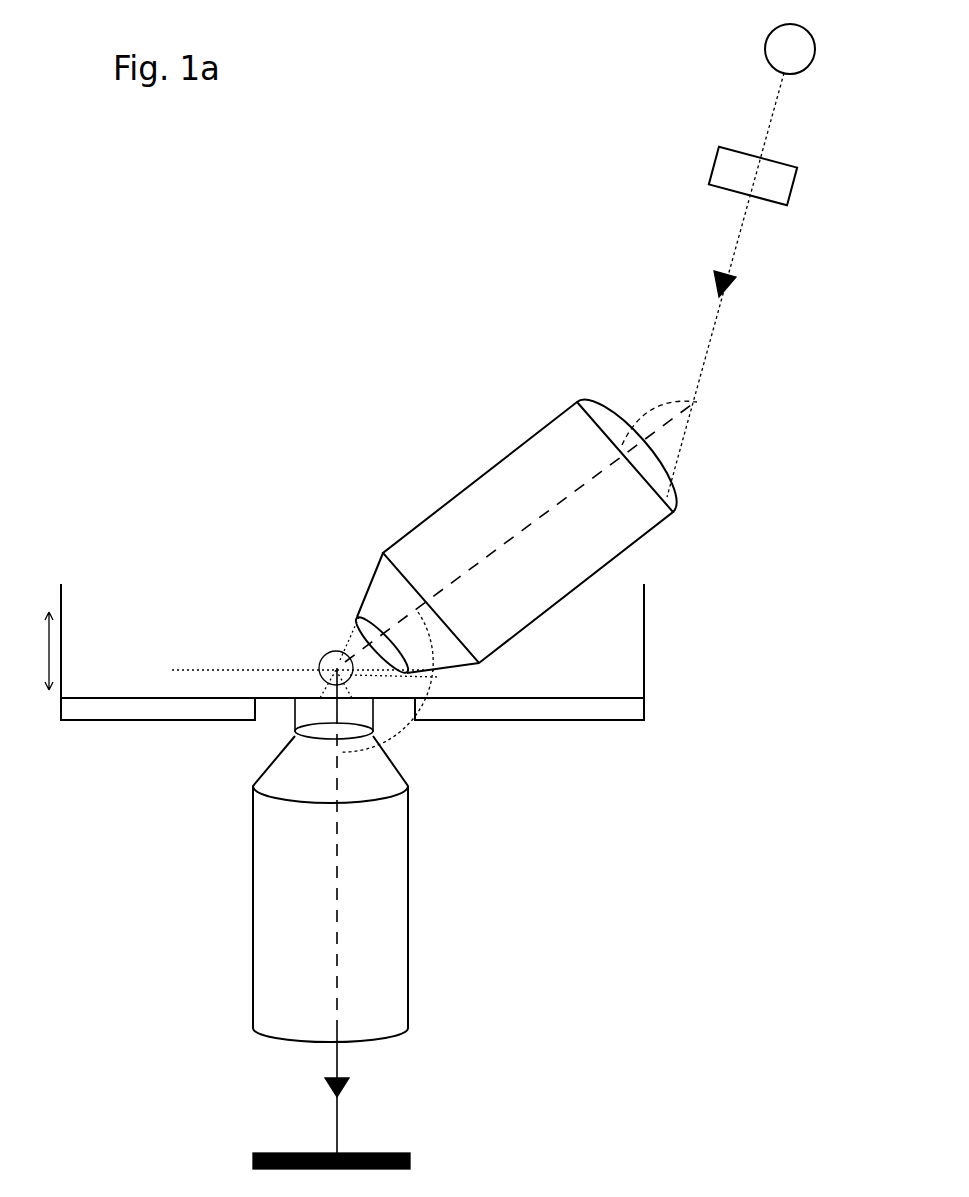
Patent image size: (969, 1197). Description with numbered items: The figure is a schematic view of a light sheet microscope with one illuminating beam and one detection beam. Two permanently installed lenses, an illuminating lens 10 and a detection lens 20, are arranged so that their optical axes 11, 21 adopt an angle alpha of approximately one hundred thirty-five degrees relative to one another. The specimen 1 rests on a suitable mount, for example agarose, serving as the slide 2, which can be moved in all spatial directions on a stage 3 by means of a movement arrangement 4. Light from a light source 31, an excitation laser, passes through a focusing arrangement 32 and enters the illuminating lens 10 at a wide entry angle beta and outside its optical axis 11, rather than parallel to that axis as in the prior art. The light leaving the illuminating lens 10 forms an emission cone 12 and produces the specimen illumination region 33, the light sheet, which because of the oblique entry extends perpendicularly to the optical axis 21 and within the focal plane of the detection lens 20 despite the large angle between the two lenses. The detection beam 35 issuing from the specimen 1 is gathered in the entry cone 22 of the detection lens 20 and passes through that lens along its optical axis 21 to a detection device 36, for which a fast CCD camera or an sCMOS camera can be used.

The specimen 1 is at (332, 653).
The slide 2 is at (325, 693).
The stage 3 is at (645, 703).
The movement arrangement 4 is at (43, 653).
The illuminating lens 10 is at (540, 480).
The optical axis 11 is at (510, 540).
The emission cone 12 is at (345, 645).
The detection lens 20 is at (273, 988).
The optical axis 21 is at (335, 897).
The entry cone 22 is at (360, 708).
The light source 31 is at (752, 50).
The focusing arrangement 32 is at (703, 159).
The specimen illumination region 33 is at (730, 230).
The detection beam 35 is at (337, 1071).
The detection device 36 is at (412, 1158).